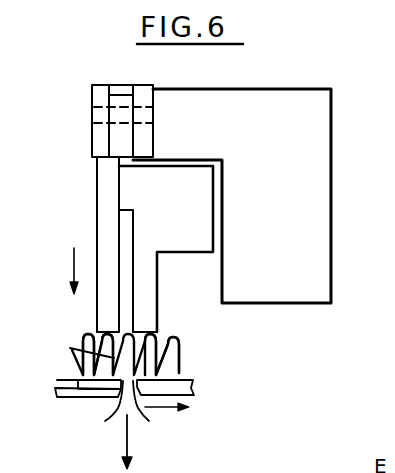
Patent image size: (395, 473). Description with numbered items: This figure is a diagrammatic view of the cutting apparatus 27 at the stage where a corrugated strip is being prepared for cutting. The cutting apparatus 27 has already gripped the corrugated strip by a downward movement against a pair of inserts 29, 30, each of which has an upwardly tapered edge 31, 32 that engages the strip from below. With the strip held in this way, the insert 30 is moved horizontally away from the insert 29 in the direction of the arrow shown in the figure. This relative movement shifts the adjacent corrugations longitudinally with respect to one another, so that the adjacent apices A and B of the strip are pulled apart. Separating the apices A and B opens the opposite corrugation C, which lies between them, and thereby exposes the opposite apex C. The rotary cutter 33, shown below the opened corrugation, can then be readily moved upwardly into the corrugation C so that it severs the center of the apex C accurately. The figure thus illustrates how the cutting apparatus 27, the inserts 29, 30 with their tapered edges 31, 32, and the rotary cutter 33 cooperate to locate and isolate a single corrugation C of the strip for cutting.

The cutting apparatus 27 is at (278, 85).
The insert 29 is at (66, 382).
The insert 30 is at (194, 389).
The upwardly tapered edge 31 is at (106, 422).
The upwardly tapered edge 32 is at (167, 422).
The rotary cutter 33 is at (130, 450).
The apex A is at (76, 345).
The apex B is at (148, 357).
The corrugation C is at (134, 330).